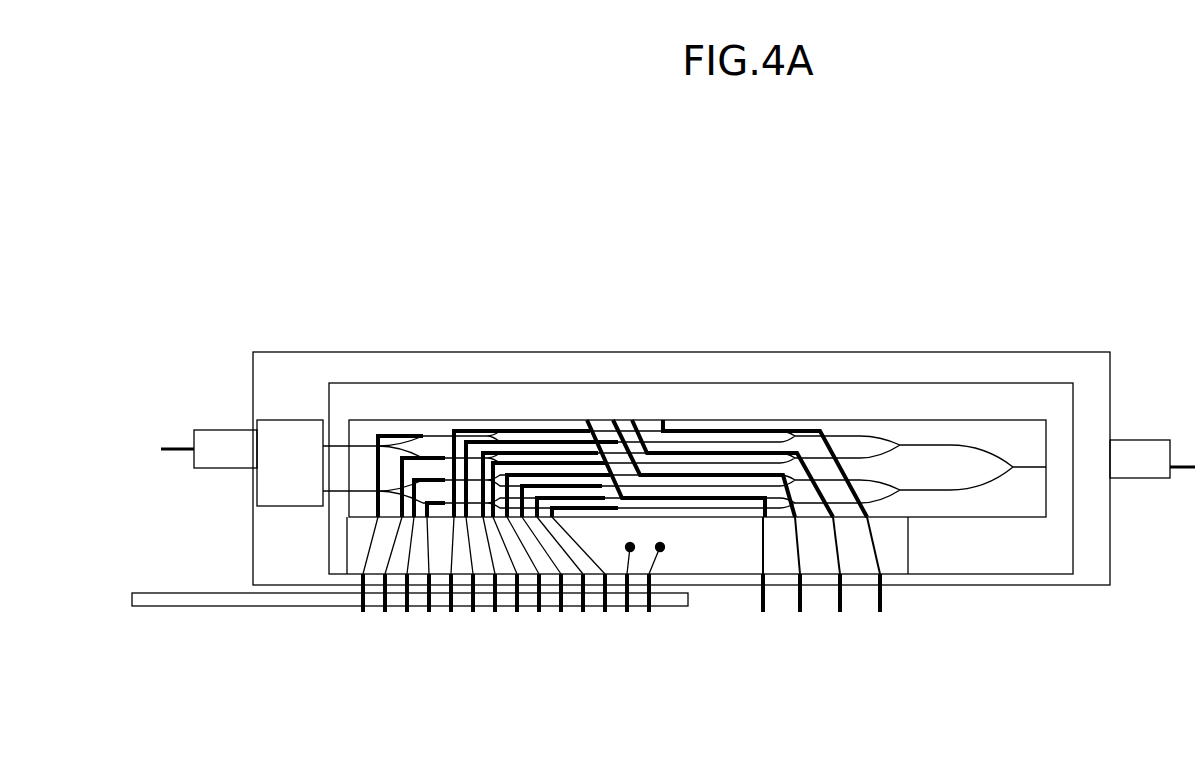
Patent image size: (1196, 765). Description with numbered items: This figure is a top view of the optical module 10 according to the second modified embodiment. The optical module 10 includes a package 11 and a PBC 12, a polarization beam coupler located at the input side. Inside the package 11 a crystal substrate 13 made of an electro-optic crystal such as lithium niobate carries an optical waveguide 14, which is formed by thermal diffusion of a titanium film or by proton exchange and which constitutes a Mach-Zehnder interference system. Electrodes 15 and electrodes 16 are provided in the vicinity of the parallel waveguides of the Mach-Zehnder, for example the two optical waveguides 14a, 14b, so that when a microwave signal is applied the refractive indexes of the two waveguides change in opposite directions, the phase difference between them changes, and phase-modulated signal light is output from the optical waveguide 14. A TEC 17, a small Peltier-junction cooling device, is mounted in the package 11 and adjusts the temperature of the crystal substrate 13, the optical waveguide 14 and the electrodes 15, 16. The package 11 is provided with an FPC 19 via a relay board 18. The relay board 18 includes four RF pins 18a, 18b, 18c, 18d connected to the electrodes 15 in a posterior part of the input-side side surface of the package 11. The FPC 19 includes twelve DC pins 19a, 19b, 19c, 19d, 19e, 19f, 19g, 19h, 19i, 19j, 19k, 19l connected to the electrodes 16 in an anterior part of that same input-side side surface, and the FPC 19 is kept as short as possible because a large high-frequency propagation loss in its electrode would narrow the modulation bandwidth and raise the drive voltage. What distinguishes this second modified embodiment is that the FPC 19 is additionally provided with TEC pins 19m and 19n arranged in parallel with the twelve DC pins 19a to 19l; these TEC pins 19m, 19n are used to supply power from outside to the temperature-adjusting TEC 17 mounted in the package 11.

The optical module 10 is at (944, 352).
The package 11 is at (1060, 574).
The PBC (Polarization Beam Coupler) 12 is at (294, 420).
The crystal substrate 13 is at (1032, 497).
The optical waveguide 14 is at (1023, 467).
The optical waveguide 14a is at (605, 432).
The optical waveguide 14b is at (630, 432).
The electrodes 15 is at (773, 508).
The electrodes 16 is at (437, 503).
The TEC (Thermo Electric Cooler) 17 is at (997, 560).
The relay board 18 is at (738, 570).
The RF pin 18a is at (765, 598).
The RF pin 18b is at (802, 598).
The RF pin 18c is at (842, 598).
The RF pin 18d is at (882, 598).
The FPC 19 is at (278, 606).
The DC pin 19a is at (364, 606).
The DC pin 19b is at (386, 606).
The DC pin 19c is at (408, 606).
The DC pin 19d is at (430, 606).
The DC pin 19e is at (452, 606).
The DC pin 19f is at (474, 606).
The DC pin 19g is at (496, 606).
The DC pin 19h is at (518, 606).
The DC pin 19i is at (540, 606).
The DC pin 19j is at (562, 606).
The DC pin 19k is at (584, 606).
The DC pin 19l is at (606, 606).
The TEC pin 19m is at (628, 606).
The TEC pin 19n is at (650, 606).